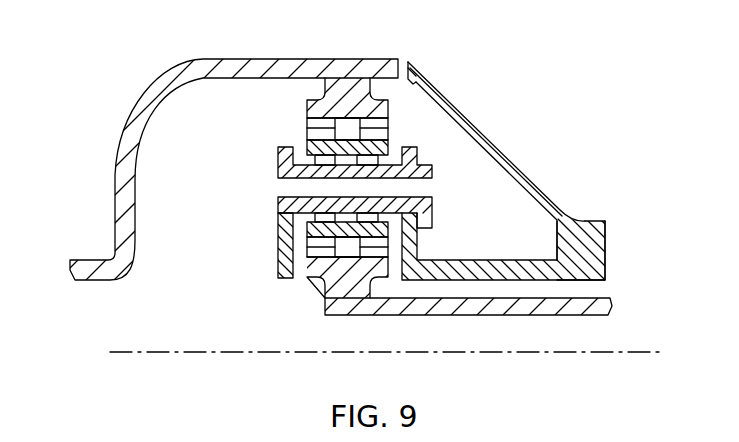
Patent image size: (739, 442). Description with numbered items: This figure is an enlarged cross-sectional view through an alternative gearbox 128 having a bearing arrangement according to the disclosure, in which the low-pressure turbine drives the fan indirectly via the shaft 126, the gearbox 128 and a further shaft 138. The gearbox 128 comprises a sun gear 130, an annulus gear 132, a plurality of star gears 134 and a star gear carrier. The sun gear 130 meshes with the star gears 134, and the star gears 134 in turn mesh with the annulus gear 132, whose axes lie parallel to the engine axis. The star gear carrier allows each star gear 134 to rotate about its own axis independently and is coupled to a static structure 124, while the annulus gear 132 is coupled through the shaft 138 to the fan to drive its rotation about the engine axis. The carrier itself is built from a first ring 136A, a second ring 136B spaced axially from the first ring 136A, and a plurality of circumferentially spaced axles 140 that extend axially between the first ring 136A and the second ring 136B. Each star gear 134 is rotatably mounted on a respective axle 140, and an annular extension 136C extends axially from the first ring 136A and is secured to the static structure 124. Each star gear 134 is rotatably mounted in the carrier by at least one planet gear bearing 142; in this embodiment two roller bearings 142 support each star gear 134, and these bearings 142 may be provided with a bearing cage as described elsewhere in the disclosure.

The static structure 124 is at (418, 75).
The shaft 126 is at (498, 306).
The gearbox 128 is at (245, 316).
The sun gear 130 is at (322, 252).
The annulus gear 132 is at (390, 103).
The star gear 134 is at (387, 148).
The first ring 136A is at (410, 243).
The second ring 136B is at (280, 232).
The annular extension 136C is at (530, 263).
The shaft 138 is at (301, 68).
The axle 140 is at (275, 175).
The planet gear bearing 142 is at (278, 204).